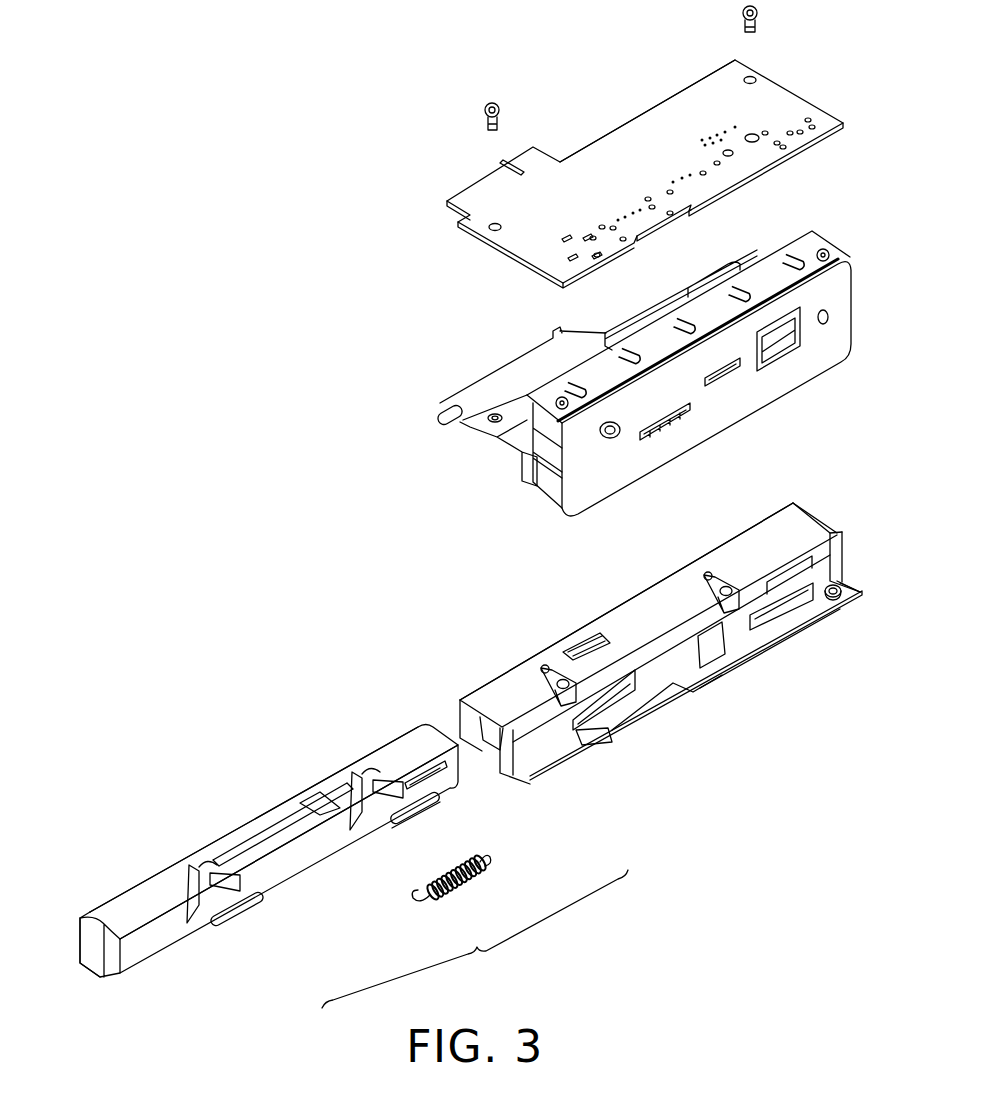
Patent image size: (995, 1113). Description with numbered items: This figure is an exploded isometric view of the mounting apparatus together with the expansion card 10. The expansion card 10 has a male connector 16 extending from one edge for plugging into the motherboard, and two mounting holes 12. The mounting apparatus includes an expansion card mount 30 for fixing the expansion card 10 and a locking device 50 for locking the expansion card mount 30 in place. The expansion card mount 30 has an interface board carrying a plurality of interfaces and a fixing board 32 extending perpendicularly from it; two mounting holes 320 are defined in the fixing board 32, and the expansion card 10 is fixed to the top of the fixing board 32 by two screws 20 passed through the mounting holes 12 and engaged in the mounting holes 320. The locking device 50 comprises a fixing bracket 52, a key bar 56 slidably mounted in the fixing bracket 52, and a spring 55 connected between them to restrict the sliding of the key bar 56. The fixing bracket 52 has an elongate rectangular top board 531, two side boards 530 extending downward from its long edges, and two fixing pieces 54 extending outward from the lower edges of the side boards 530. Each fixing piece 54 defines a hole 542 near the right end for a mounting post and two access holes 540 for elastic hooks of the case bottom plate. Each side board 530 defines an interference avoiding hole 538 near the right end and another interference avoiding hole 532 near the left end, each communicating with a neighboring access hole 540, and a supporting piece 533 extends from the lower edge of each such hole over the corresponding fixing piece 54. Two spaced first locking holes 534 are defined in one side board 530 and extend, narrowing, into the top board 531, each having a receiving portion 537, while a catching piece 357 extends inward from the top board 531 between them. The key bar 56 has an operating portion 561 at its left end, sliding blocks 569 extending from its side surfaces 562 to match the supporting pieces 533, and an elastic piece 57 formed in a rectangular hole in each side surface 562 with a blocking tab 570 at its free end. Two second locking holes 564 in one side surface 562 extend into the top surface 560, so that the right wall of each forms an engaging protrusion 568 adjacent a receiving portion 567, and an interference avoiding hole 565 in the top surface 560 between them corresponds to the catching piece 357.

The expansion card 10 is at (655, 86).
The mounting hole 12 is at (752, 78).
The male connector 16 is at (475, 190).
The screw 20 is at (490, 105).
The expansion card mount 30 is at (488, 364).
The fixing board 32 is at (545, 368).
The mounting hole 320 is at (495, 415).
The locking device 50 is at (475, 939).
The fixing bracket 52 is at (543, 788).
The side board 530 is at (823, 550).
The top board 531 is at (745, 547).
The interference avoiding hole 532 is at (630, 683).
The supporting piece 533 is at (627, 712).
The first locking hole 534 is at (565, 702).
The receiving portion 537 is at (540, 668).
The interference avoiding hole 538 is at (780, 590).
The fixing piece 54 is at (802, 615).
The access hole 540 is at (720, 653).
The hole 542 is at (837, 597).
The catching piece 357 is at (593, 643).
The spring 55 is at (458, 893).
The key bar 56 is at (257, 931).
The top surface 560 is at (148, 895).
The operating portion 561 is at (97, 957).
The side surface 562 is at (137, 953).
The second locking hole 564 is at (200, 892).
The interference avoiding hole 565 is at (267, 837).
The receiving portion 567 is at (203, 858).
The engaging protrusion 568 is at (377, 770).
The sliding block 569 is at (263, 910).
The elastic piece 57 is at (422, 782).
The blocking tab 570 is at (440, 777).